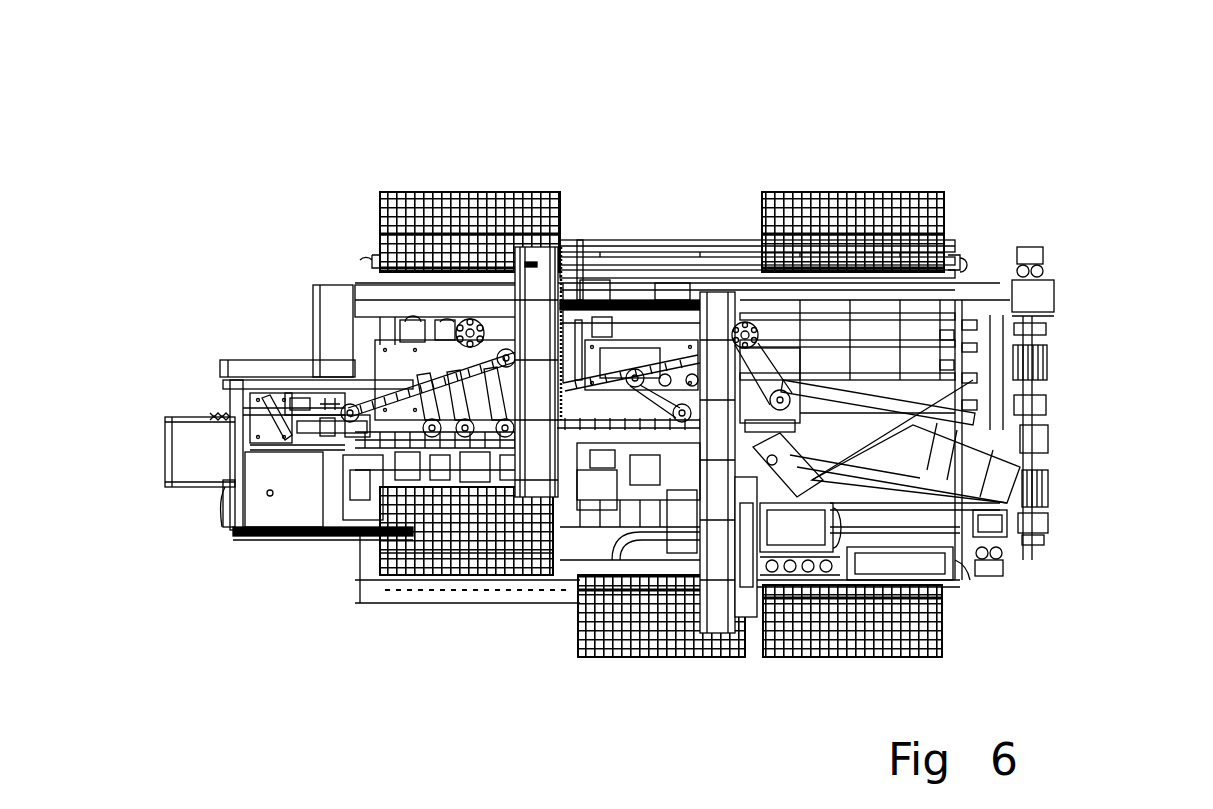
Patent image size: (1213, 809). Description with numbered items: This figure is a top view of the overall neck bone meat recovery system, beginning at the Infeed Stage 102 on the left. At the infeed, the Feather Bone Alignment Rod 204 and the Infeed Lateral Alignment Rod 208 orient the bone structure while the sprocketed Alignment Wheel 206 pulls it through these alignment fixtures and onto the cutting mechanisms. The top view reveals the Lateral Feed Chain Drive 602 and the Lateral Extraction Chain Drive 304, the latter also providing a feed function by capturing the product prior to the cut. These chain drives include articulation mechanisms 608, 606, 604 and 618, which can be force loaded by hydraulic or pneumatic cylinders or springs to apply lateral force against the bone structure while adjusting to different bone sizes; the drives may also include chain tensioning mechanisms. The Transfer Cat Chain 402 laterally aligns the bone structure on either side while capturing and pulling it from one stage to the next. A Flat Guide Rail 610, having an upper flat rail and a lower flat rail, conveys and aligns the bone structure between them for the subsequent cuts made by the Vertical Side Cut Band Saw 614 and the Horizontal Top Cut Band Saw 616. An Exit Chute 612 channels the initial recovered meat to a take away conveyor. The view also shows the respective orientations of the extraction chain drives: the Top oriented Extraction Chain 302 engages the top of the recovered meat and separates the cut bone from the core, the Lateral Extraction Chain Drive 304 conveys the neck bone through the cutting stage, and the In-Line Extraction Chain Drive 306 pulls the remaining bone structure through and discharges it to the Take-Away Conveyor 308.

The Infeed Stage 102 is at (184, 330).
The Feather Bone Alignment Rod 204 is at (224, 492).
The sprocketed Alignment Wheel 206 is at (345, 420).
The Infeed Lateral Alignment Rod 208 is at (172, 440).
The Top oriented Extraction Chain 302 is at (998, 410).
The Lateral Extraction Chain Drive 304 is at (735, 362).
The In-Line Extraction Chain Drive 306 is at (840, 386).
The Take-Away Conveyor 308 is at (990, 466).
The Transfer Cat Chain 402 is at (650, 412).
The Lateral Feed Chain Drive 602 is at (365, 388).
The articulation mechanism 604 is at (522, 365).
The articulation mechanism 606 is at (462, 378).
The articulation mechanism 608 is at (410, 388).
The Flat Guide Rail 610 is at (385, 440).
The Exit Chute 612 is at (565, 393).
The Vertical Side Cut Band Saw 614 is at (530, 435).
The Horizontal Top Cut Band Saw 616 is at (715, 540).
The articulation mechanism 618 is at (792, 430).